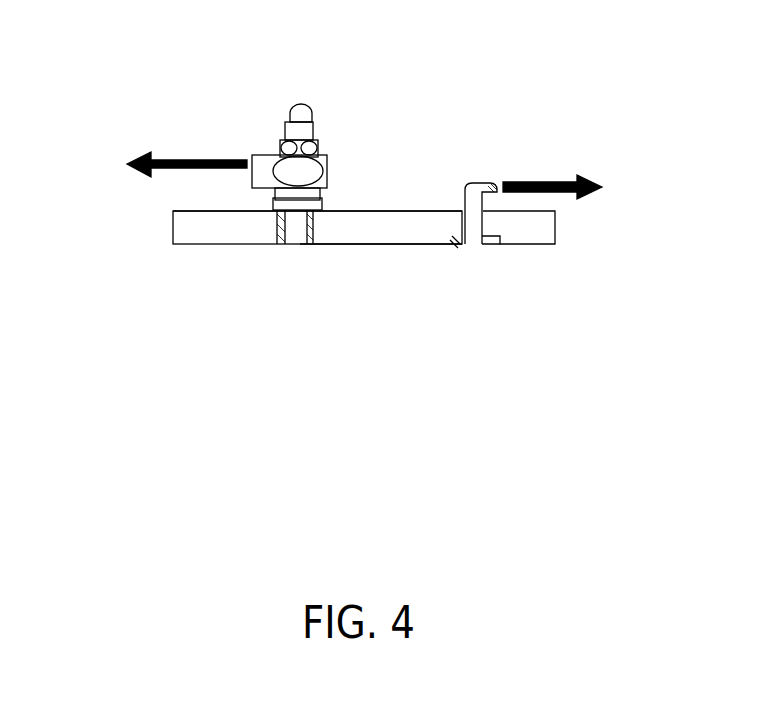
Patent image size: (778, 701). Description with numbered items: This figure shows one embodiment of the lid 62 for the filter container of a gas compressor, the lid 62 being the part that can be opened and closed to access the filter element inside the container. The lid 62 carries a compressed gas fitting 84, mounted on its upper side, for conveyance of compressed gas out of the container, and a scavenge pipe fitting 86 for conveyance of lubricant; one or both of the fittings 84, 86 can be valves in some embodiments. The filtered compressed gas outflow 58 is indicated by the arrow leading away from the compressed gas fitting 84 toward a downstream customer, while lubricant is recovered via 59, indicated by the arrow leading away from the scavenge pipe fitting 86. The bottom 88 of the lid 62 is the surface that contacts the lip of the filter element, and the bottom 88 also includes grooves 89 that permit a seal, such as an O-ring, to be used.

The filtered compressed gas outflow 58 is at (187, 158).
The lubricant recovery flow 59 is at (557, 182).
The lid 62 is at (392, 212).
The compressed gas fitting 84 is at (313, 135).
The scavenge pipe fitting 86 is at (497, 187).
The bottom 88 is at (223, 246).
The grooves 89 is at (455, 250).